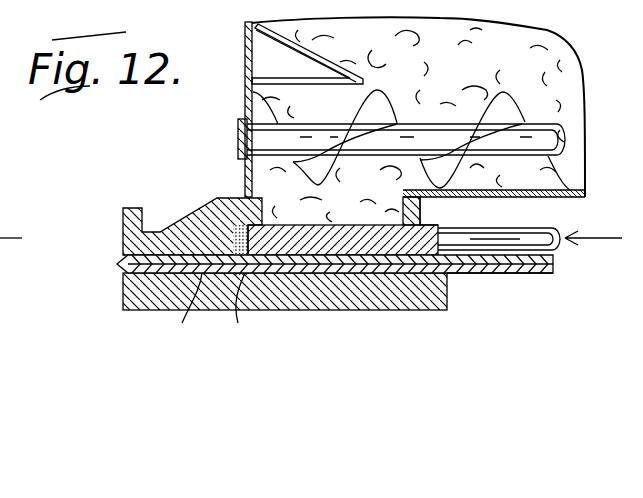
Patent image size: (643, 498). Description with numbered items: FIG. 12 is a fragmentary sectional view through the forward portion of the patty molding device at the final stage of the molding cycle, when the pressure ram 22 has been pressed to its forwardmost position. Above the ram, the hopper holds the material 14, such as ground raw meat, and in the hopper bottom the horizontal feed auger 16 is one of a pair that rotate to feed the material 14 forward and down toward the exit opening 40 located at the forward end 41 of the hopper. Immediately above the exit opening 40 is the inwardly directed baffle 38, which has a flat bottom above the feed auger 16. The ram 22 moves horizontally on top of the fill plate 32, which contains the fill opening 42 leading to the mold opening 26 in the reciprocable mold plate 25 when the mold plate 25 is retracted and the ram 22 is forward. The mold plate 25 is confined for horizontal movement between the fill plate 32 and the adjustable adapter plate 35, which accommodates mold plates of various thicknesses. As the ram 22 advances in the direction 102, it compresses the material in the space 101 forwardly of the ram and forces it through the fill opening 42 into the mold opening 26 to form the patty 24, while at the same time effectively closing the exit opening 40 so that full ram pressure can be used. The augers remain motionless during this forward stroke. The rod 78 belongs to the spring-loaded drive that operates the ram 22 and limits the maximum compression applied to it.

The material 14 is at (477, 62).
The feed auger 16 is at (508, 113).
The pressure ram 22 is at (437, 227).
The patty 24 is at (200, 317).
The mold plate 25 is at (482, 273).
The mold opening 26 is at (258, 316).
The fill plate 32 is at (116, 265).
The adapter plate 35 is at (355, 298).
The baffle 38 is at (320, 50).
The exit opening 40 is at (277, 217).
The forward end of the hopper 41 is at (245, 84).
The fill opening 42 is at (207, 204).
The rod 78 is at (540, 229).
The space 101 is at (241, 198).
The advancing direction of the ram 102 is at (600, 240).